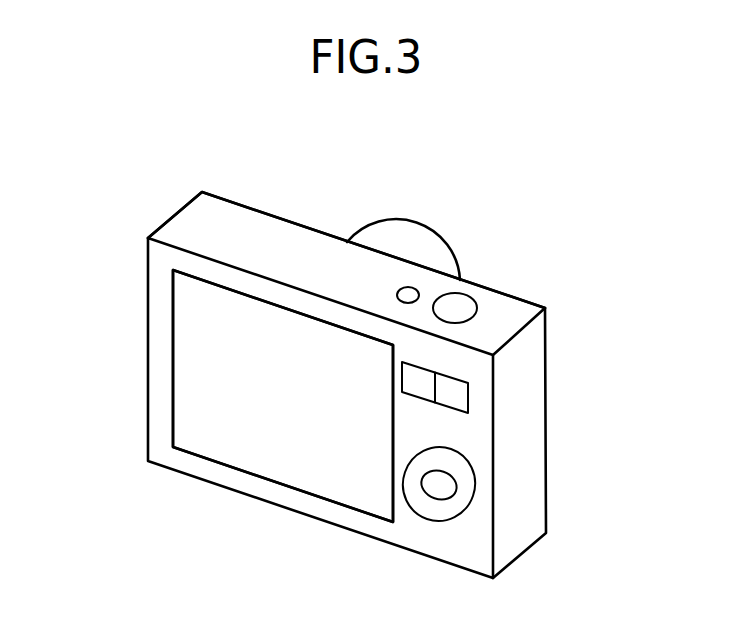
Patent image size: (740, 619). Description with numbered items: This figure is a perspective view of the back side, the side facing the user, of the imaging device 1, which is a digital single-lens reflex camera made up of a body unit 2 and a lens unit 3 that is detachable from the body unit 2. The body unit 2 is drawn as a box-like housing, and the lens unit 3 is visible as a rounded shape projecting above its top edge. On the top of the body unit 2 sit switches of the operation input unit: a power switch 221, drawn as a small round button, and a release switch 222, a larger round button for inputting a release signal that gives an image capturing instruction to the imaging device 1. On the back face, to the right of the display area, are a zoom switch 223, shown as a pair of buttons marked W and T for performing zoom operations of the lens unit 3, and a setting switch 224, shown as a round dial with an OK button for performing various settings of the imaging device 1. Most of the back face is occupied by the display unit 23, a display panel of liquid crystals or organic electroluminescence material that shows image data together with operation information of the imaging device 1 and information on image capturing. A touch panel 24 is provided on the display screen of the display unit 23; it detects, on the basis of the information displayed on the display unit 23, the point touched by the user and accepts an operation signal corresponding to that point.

The imaging device 1 is at (552, 244).
The body unit 2 is at (245, 227).
The lens unit 3 is at (400, 235).
The display unit 23 is at (185, 322).
The touch panel 24 is at (232, 443).
The power switch 221 is at (408, 288).
The release switch 222 is at (453, 307).
The zoom switch 223 is at (468, 395).
The setting switch 224 is at (468, 472).